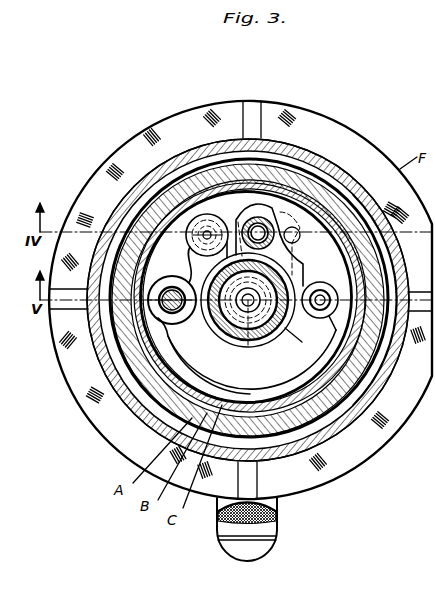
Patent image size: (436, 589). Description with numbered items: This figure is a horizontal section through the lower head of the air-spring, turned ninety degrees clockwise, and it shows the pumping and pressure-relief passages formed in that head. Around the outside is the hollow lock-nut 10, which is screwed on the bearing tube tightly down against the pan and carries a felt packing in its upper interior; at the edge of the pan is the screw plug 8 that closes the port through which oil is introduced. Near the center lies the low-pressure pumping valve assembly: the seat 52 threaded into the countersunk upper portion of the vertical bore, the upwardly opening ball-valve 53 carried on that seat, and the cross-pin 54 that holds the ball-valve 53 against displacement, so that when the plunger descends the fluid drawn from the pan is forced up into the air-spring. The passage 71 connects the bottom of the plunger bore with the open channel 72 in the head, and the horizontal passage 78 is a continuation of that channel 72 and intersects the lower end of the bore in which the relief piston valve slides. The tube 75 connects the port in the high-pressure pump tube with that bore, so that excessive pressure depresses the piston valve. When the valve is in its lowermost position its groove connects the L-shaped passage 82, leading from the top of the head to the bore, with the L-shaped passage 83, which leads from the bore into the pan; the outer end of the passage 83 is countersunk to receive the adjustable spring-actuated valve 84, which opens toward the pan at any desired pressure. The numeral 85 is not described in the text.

The lock-nut 10 is at (325, 487).
The screw plug 8 is at (277, 540).
The adjustable spring-actuated valve 84 is at (165, 172).
The passage 83 is at (222, 215).
The passage 82 is at (363, 188).
The ring portion 85 is at (373, 383).
The horizontal passage 78 is at (267, 212).
The tube 75 is at (282, 205).
The open channel 72 is at (248, 296).
The passage 71 is at (250, 340).
The ball-valve 53 is at (150, 309).
The cross-pin 54 is at (165, 322).
The seat 52 is at (168, 332).